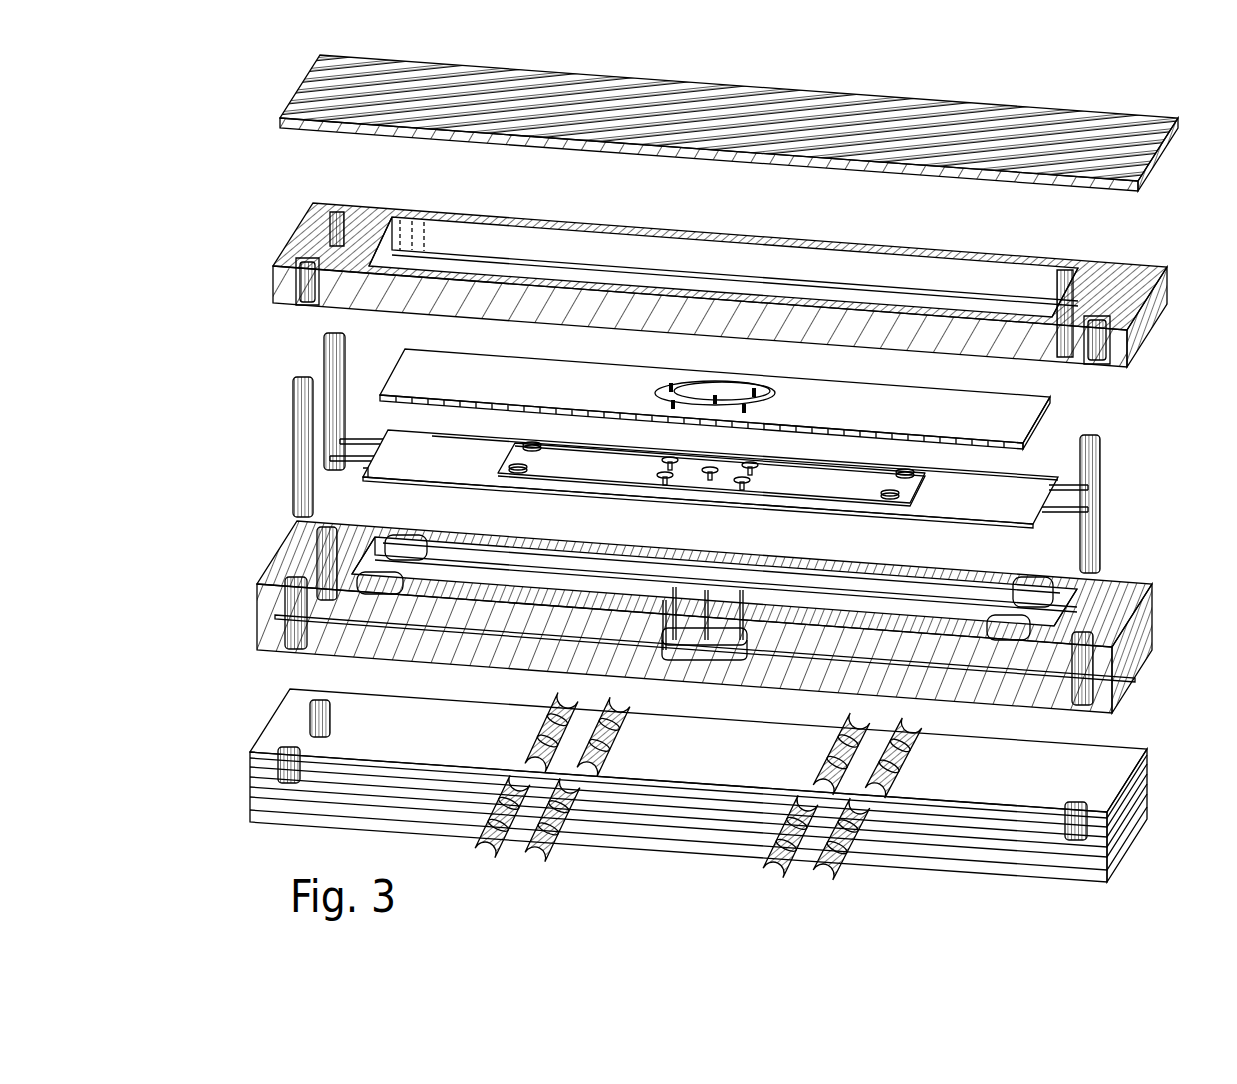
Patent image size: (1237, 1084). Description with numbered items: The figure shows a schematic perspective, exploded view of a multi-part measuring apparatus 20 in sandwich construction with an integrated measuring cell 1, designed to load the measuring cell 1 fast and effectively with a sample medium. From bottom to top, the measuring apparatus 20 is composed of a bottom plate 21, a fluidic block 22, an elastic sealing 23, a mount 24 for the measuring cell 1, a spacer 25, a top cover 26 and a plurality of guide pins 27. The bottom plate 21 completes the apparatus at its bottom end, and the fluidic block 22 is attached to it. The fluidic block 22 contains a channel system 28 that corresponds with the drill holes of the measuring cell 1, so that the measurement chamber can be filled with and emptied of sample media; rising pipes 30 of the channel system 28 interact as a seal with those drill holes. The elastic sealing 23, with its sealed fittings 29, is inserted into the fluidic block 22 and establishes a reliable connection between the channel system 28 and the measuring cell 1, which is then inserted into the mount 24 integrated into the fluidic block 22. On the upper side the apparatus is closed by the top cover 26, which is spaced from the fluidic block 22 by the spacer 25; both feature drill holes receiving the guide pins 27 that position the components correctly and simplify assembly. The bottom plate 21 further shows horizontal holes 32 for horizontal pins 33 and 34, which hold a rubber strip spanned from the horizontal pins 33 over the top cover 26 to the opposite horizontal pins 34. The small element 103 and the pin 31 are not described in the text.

The measuring apparatus 20 is at (248, 158).
The top cover 26 is at (1158, 158).
The spacer 25 is at (715, 285).
The locating pin 31 is at (298, 298).
The measuring cell 1 is at (736, 399).
The sensor element 103 is at (632, 389).
The guide pins 27 is at (292, 462).
The elastic sealing 23 is at (709, 472).
The sealed fittings 29 is at (654, 468).
The fluidic block 22 is at (717, 628).
The mount 24 is at (858, 612).
The rising pipes 30 is at (650, 624).
The channel system 28 is at (355, 628).
The bottom plate 21 is at (724, 809).
The horizontal holes 32 is at (867, 822).
The horizontal pins 33 is at (763, 835).
The horizontal pins 34 is at (922, 727).